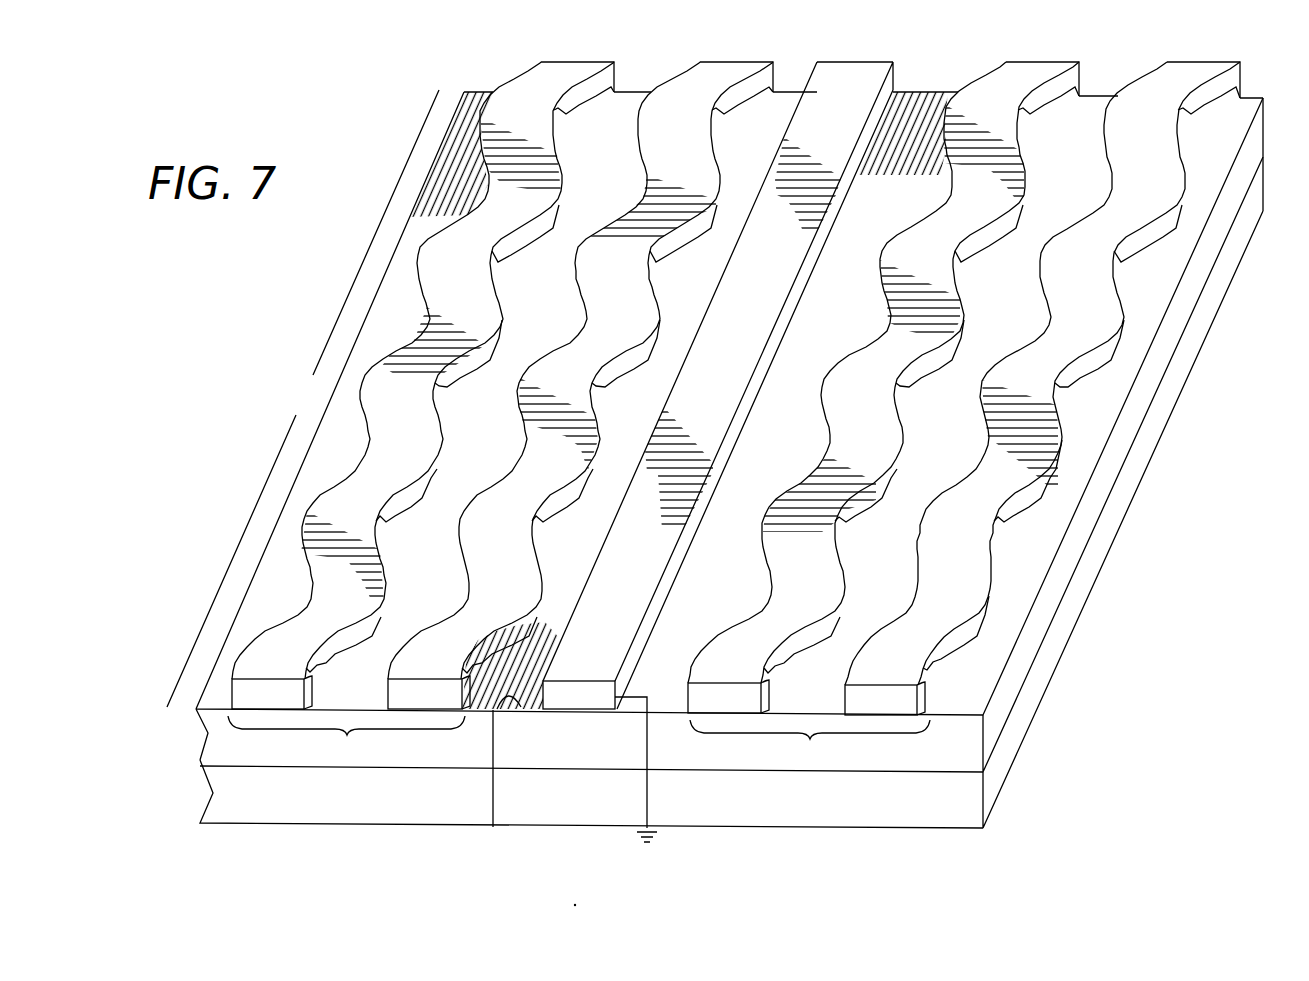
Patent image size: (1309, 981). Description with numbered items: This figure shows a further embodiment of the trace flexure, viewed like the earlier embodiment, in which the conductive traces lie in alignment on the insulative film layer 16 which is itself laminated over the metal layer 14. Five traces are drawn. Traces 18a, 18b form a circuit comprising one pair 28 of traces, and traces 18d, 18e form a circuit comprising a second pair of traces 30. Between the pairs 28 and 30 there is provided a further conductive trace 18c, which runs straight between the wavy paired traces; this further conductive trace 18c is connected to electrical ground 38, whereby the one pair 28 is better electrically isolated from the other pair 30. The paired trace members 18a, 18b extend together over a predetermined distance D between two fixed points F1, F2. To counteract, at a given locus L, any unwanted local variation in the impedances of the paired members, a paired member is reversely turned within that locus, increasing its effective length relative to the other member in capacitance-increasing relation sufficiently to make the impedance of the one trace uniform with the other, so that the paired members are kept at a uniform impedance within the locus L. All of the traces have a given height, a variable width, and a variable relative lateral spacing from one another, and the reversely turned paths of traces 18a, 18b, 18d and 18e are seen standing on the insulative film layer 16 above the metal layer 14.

The metal layer 14 is at (1007, 738).
The insulative film layer 16 is at (1045, 605).
The conductive trace 18a is at (558, 72).
The conductive trace 18b is at (733, 70).
The further conductive trace 18c is at (865, 82).
The conductive trace 18d is at (1048, 72).
The conductive trace 18e is at (1208, 76).
The pair of traces 28 is at (346, 741).
The second pair of traces 30 is at (810, 744).
The electrical ground 38 is at (650, 850).
The fixed point F1 is at (625, 93).
The fixed point F2 is at (499, 780).
The predetermined distance D is at (303, 398).
The locus L is at (1090, 447).